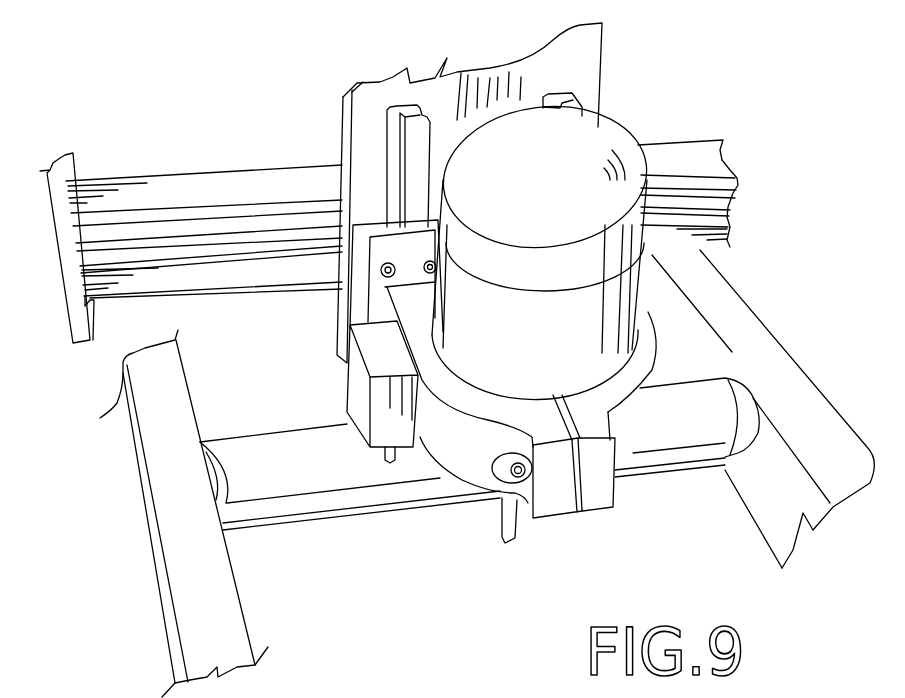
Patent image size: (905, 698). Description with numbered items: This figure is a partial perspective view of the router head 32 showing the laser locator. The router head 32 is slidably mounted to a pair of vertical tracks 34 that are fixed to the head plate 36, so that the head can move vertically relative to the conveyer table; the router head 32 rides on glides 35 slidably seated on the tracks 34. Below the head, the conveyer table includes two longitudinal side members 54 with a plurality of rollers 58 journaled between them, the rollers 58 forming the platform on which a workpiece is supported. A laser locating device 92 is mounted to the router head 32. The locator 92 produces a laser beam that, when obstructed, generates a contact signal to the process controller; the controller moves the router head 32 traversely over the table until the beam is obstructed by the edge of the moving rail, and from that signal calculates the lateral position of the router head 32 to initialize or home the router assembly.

The router head 32 is at (607, 313).
The vertical tracks 34 is at (393, 135).
The glides 35 is at (380, 247).
The head plate 36 is at (577, 60).
The longitudinal side members 54 is at (218, 622).
The rollers 58 is at (337, 500).
The laser locating device 92 is at (353, 388).